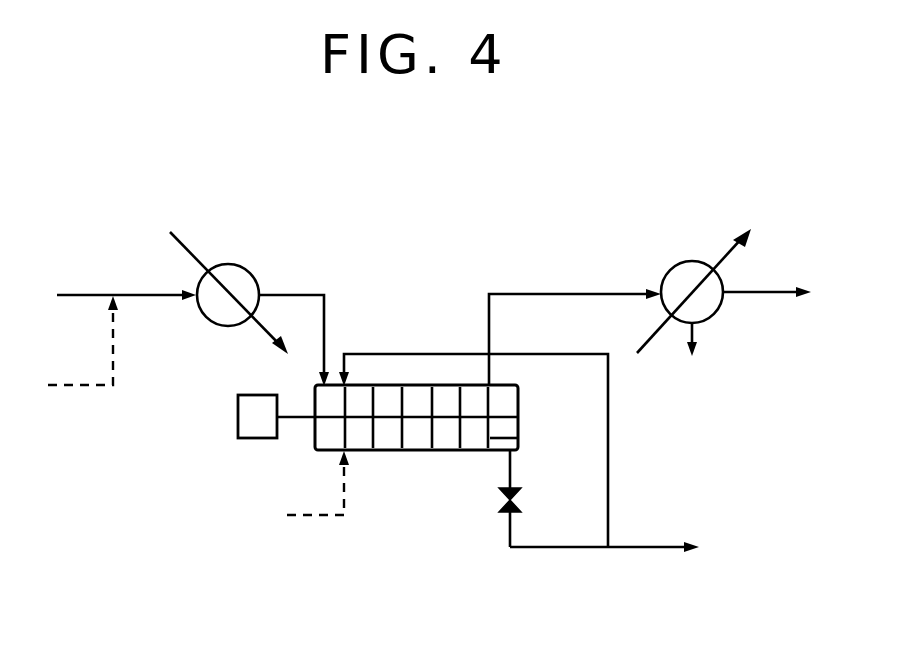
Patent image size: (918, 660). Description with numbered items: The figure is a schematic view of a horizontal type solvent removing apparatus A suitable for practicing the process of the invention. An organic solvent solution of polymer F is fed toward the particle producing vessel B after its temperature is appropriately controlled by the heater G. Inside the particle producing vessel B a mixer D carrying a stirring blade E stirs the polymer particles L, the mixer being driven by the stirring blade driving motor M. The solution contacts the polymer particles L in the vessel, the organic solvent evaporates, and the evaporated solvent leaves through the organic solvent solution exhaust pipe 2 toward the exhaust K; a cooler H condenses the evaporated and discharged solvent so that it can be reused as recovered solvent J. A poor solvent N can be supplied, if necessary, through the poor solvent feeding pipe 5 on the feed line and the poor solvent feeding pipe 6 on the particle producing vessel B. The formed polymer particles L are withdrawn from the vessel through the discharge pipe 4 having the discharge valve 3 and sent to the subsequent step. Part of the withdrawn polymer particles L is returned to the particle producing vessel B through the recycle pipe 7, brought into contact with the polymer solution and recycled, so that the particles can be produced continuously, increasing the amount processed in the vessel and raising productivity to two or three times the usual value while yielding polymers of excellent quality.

The organic solvent solution exhaust pipe 2 is at (570, 291).
The discharge valve 3 is at (522, 500).
The discharge pipe 4 is at (558, 549).
The poor solvent feeding pipe 5 is at (74, 392).
The poor solvent feeding pipe 6 is at (306, 520).
The recycle pipe 7 is at (609, 443).
The solvent removing apparatus A is at (406, 264).
The particle producing vessel B is at (420, 452).
The mixer D is at (268, 440).
The blade of the mixer E is at (518, 438).
The organic solvent solution of polymer F is at (113, 295).
The heater G is at (229, 292).
The cooler H is at (694, 290).
The inlet I is at (84, 293).
The recovered solvent J is at (688, 356).
The exhaust K is at (782, 294).
The polymer particles L is at (718, 545).
The motor of the mixer M is at (257, 416).
The poor solvent N is at (146, 450).